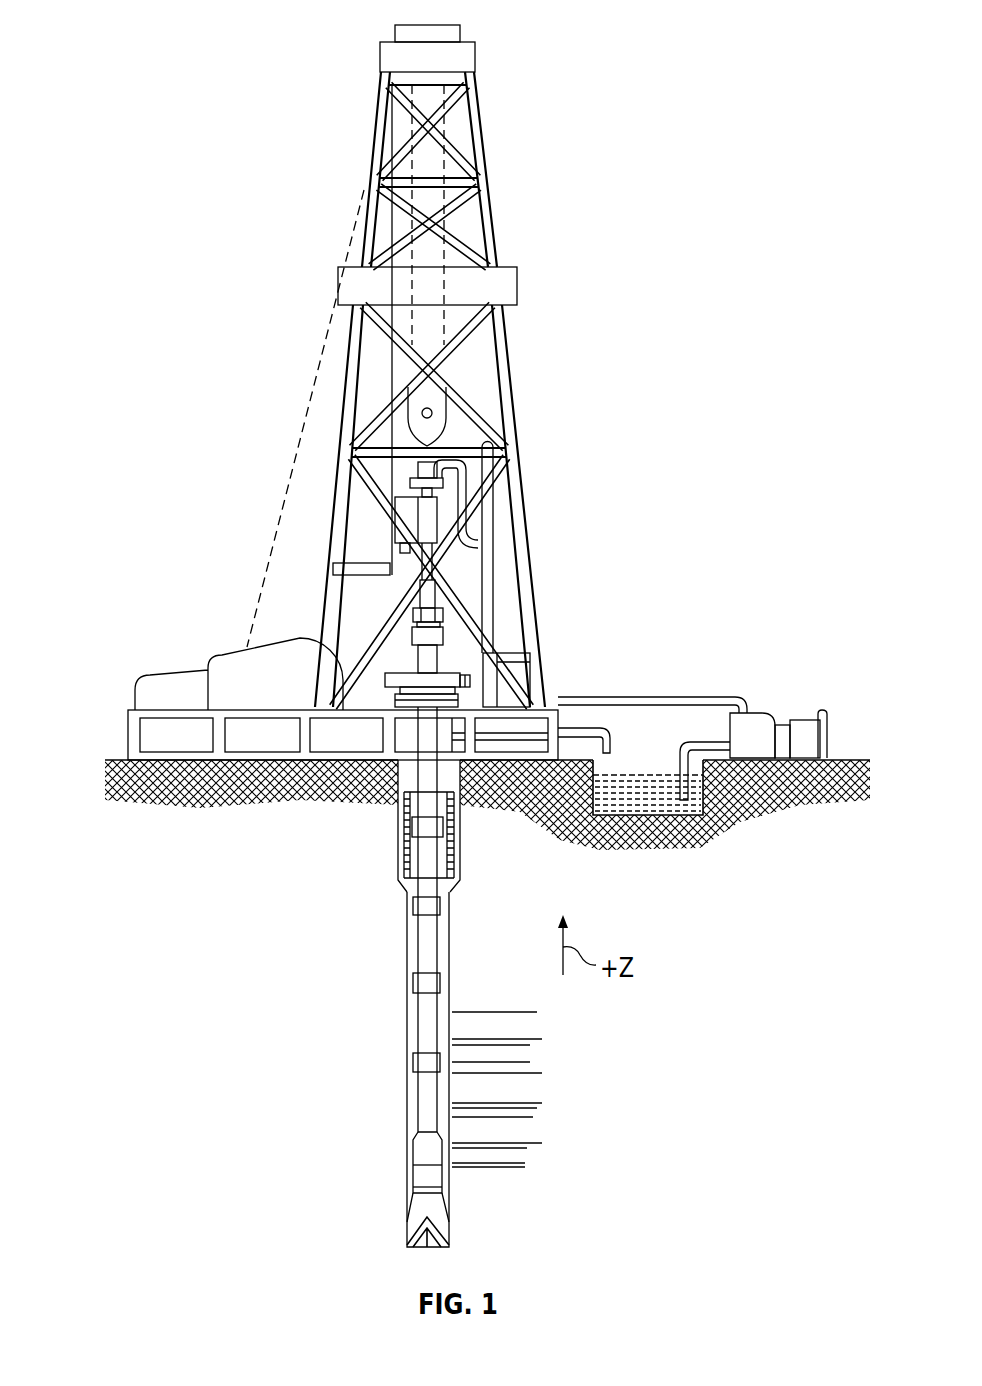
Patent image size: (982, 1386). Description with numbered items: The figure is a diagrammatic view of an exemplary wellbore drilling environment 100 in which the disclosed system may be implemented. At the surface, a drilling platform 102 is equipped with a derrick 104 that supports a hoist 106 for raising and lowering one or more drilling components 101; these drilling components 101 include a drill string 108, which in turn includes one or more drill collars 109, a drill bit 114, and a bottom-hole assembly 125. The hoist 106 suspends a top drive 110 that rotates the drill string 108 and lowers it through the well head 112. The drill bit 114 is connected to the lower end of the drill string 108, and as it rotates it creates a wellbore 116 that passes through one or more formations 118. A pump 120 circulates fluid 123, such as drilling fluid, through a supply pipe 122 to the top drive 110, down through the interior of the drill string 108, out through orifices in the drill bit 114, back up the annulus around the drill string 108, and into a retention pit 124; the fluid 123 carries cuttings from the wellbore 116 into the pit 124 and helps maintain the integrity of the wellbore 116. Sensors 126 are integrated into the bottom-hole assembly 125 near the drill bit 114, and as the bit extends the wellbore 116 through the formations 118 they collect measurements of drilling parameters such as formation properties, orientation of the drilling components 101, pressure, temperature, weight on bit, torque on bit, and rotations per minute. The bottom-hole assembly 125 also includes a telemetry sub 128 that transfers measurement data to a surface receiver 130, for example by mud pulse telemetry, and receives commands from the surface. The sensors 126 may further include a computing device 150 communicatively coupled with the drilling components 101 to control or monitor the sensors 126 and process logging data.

The wellbore drilling environment 100 is at (242, 45).
The drilling platform 102 is at (128, 736).
The derrick 104 is at (485, 214).
The hoist 106 is at (448, 415).
The drill string 108 is at (438, 935).
The top drive 110 is at (428, 522).
The well head 112 is at (450, 672).
The drill bit 114 is at (449, 1232).
The wellbore 116 is at (450, 972).
The formations 118 is at (548, 1010).
The pump 120 is at (755, 722).
The supply pipe 122 is at (646, 697).
The fluid 123 is at (618, 778).
The retention pit 124 is at (646, 802).
The drilling components 101 is at (339, 966).
The drill collars 109 is at (425, 957).
The bottom-hole assembly 125 is at (339, 1161).
The sensors 126 is at (422, 1182).
The telemetry sub 128 is at (422, 1155).
The surface receiver 130 is at (443, 612).
The computing device 150 is at (413, 1188).